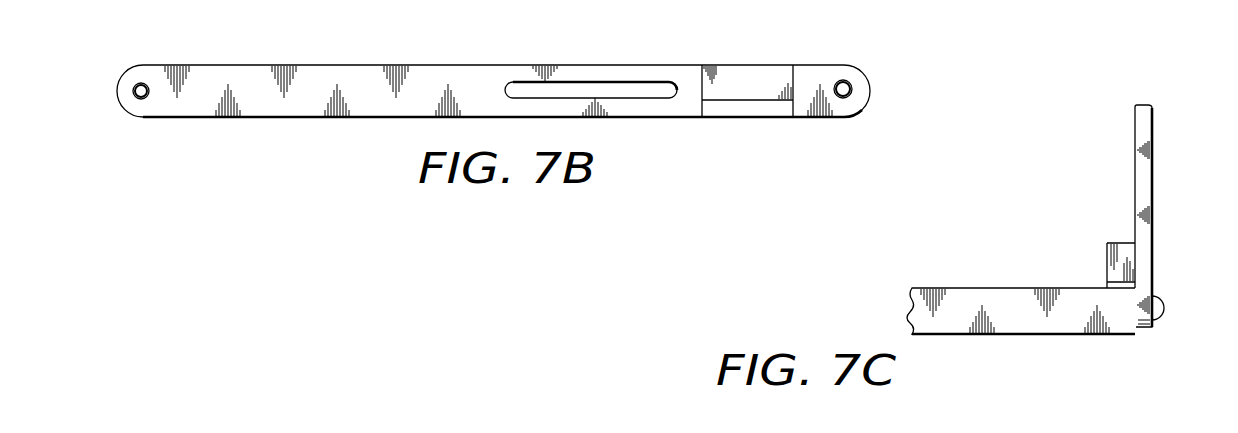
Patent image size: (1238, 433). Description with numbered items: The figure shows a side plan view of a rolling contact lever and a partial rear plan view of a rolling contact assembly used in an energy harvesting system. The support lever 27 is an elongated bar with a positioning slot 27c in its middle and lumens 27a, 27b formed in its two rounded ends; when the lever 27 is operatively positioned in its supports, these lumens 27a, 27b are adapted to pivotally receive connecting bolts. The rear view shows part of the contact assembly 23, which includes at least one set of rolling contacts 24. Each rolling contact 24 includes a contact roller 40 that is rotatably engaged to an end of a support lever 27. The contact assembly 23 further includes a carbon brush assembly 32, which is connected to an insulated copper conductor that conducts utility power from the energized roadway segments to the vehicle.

In FIG. 7C, the contact assembly 23 is at (1053, 245).
In FIG. 7C, the rolling contact 24 is at (1154, 212).
In FIG. 7B, the support lever 27 is at (336, 65).
In FIG. 7B, the lumen 27a is at (140, 82).
In FIG. 7B, the lumen 27b is at (849, 80).
In FIG. 7B, the positioning slot 27c is at (587, 92).
In FIG. 7C, the carbon brush assembly 32 is at (1110, 243).
In FIG. 7C, the contact roller 40 is at (1048, 336).